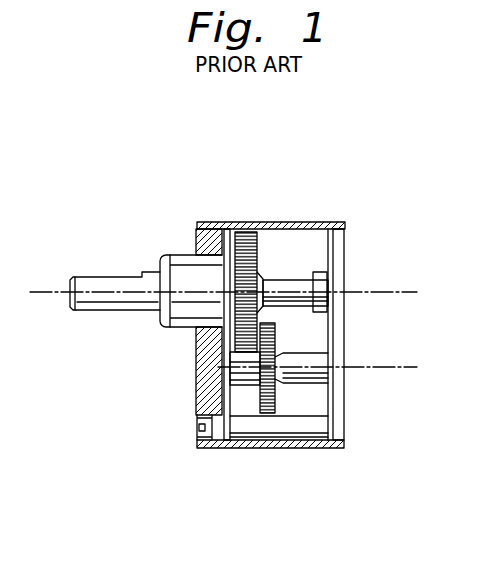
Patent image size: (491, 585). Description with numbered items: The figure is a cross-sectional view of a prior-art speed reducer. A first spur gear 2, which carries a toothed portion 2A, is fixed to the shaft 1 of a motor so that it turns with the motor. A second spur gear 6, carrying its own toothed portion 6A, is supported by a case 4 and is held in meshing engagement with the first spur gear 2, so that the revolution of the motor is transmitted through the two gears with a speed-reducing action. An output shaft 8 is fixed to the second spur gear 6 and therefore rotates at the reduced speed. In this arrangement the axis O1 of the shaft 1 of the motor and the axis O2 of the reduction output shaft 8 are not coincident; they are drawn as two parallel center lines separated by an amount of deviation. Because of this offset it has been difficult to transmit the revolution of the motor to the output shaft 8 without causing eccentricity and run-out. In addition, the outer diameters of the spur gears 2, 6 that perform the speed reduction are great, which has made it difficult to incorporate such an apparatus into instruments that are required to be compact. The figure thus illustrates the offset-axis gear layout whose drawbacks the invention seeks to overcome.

The shaft of a motor 1 is at (308, 378).
The first spur gear 2 is at (252, 390).
The toothed portion 2A is at (245, 377).
The case 4 is at (270, 443).
The second spur gear 6 is at (292, 287).
The toothed portion 6A is at (247, 232).
The output shaft 8 is at (148, 283).
The axis of the shaft of the motor O1 is at (334, 368).
The axis of the reduction output shaft O2 is at (240, 293).